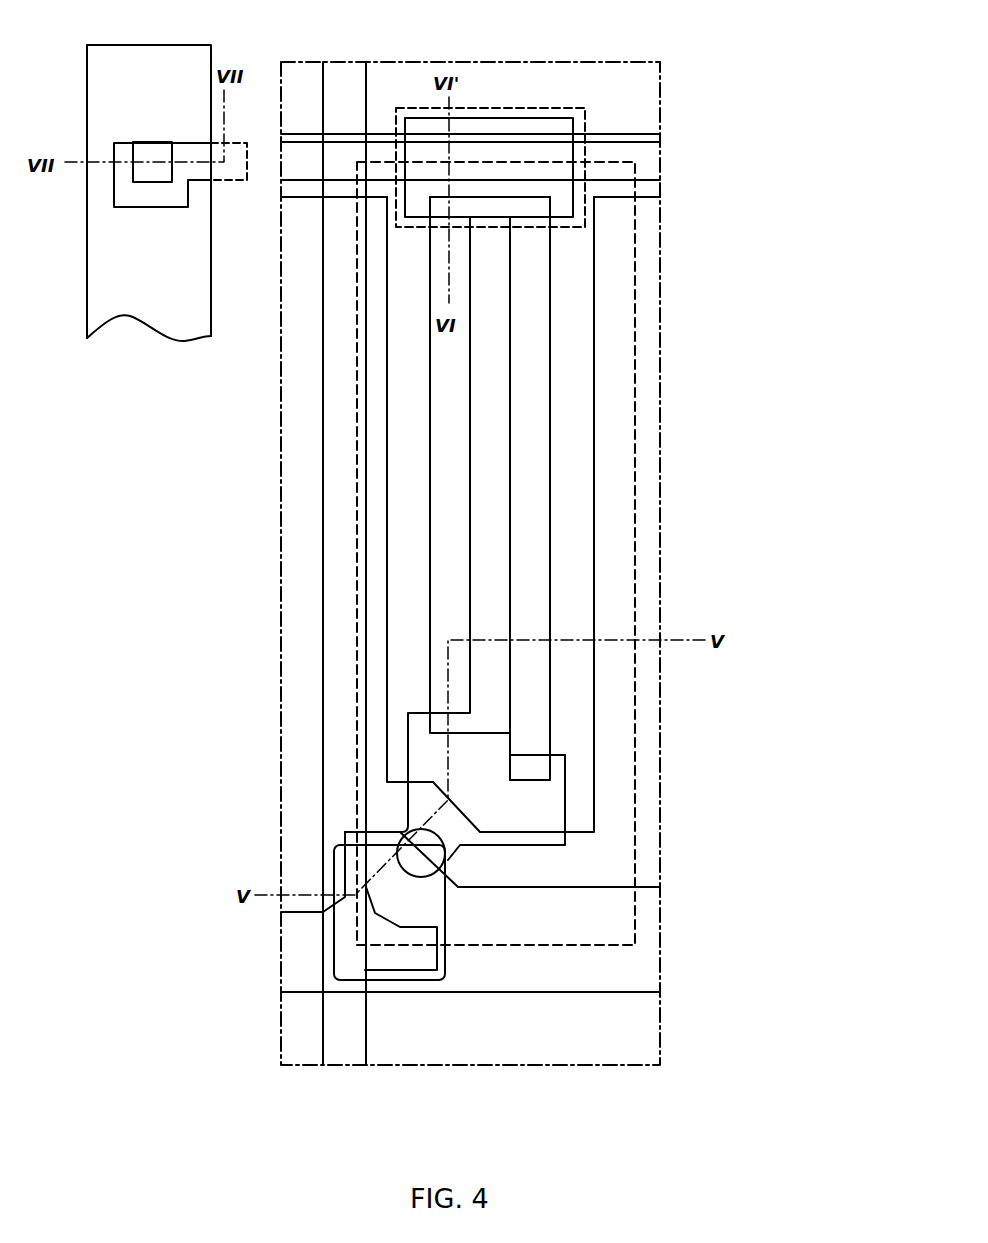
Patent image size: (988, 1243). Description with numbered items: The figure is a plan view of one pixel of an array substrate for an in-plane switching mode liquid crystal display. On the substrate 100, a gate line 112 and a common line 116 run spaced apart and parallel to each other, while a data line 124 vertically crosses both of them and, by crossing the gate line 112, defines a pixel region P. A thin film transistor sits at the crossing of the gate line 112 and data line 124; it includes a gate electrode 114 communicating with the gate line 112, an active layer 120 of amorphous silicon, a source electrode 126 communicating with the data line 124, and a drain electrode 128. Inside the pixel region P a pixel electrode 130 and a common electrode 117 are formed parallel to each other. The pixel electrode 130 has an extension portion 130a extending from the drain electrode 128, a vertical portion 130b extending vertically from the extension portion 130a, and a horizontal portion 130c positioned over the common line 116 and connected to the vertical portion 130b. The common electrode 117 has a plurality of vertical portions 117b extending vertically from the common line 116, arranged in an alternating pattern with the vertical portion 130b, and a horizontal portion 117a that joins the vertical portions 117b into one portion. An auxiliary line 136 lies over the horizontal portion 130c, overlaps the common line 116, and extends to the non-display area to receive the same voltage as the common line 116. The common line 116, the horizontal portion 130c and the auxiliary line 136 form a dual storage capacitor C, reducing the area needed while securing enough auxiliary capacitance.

The substrate 100 is at (662, 305).
The pixel region P is at (636, 392).
The storage capacitor C is at (553, 108).
The gate line 112 is at (628, 993).
The gate electrode 114 is at (375, 830).
The common line 116 is at (630, 133).
The common electrode 117 is at (630, 528).
The horizontal portion of the common electrode 117a is at (583, 813).
The vertical portions of the common electrode 117b is at (594, 745).
The active layer 120 is at (447, 960).
The data line 124 is at (323, 722).
The source electrode 126 is at (410, 960).
The drain electrode 128 is at (447, 860).
The pixel electrode 130 is at (603, 430).
The extension portion of the pixel electrode 130a is at (535, 755).
The vertical portion of the pixel electrode 130b is at (511, 598).
The horizontal portion of the pixel electrode 130c is at (510, 115).
The auxiliary line 136 is at (310, 137).